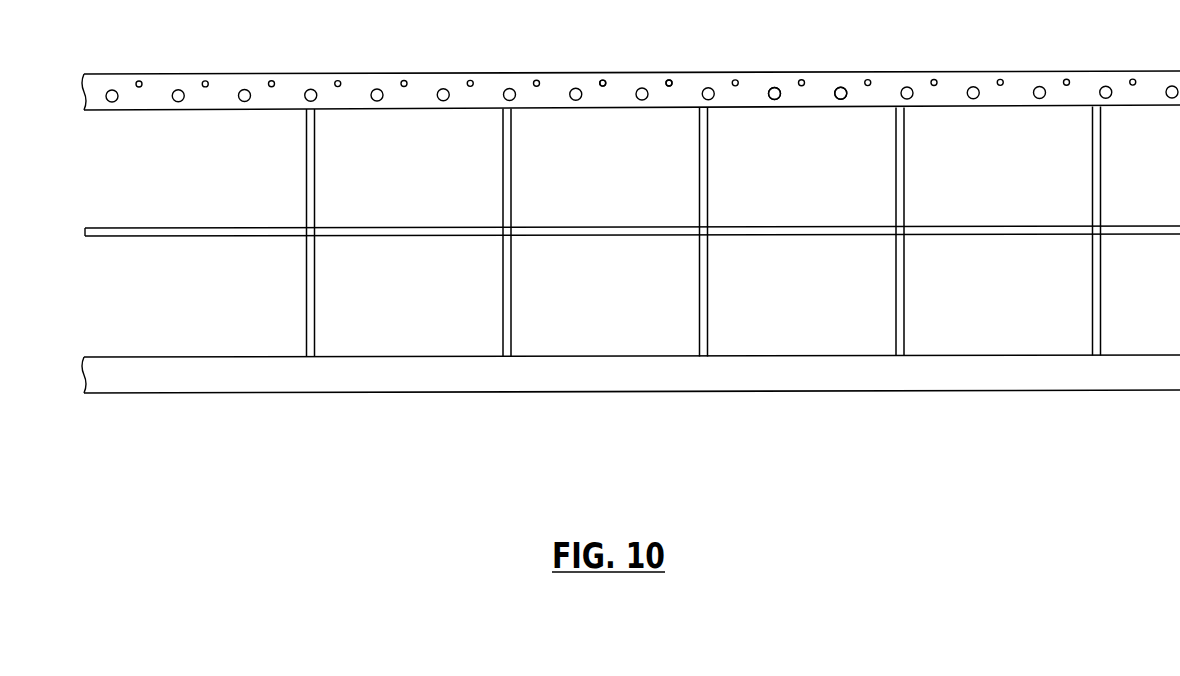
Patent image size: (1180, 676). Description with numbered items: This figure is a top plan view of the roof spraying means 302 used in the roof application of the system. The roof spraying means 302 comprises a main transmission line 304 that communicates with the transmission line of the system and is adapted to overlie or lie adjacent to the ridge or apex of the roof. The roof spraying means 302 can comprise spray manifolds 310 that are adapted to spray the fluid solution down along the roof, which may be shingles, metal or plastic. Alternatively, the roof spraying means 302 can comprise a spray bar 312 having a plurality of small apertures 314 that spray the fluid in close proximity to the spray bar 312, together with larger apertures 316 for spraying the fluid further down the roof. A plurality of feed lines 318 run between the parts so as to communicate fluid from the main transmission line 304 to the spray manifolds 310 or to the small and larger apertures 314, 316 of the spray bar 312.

The roof spraying means 302 is at (631, 257).
The main transmission line 304 is at (799, 227).
The spray manifolds 310 is at (367, 379).
The spray bar 312 is at (456, 82).
The small apertures 314 is at (667, 87).
The larger apertures 316 is at (838, 100).
The feed lines 318 is at (502, 180).